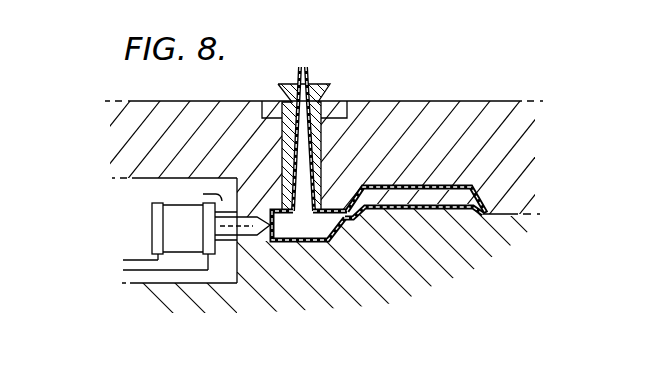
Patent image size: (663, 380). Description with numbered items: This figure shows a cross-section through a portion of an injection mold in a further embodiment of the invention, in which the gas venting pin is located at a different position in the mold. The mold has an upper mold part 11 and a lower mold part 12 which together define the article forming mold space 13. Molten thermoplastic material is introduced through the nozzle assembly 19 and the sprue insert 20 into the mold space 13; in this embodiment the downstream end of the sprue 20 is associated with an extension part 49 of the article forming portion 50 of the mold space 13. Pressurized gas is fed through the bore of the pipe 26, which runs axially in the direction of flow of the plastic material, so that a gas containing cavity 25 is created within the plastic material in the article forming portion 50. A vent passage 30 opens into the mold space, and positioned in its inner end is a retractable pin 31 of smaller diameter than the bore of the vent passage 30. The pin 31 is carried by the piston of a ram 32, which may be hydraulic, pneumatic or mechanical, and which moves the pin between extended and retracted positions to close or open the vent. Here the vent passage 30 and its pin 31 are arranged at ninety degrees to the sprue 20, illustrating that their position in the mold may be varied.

The upper mold part 11 is at (123, 129).
The lower mold part 12 is at (132, 285).
The article forming mold space 13 is at (478, 199).
The nozzle assembly 19 is at (279, 88).
The sprue insert 20 is at (340, 102).
The gas containing cavity 25 is at (465, 212).
The gas supply pipe 26 is at (301, 69).
The vent passage 30 is at (249, 240).
The vent pin 31 is at (258, 240).
The ram 32 is at (165, 219).
The extension part 49 is at (311, 243).
The article forming portion 50 is at (432, 185).